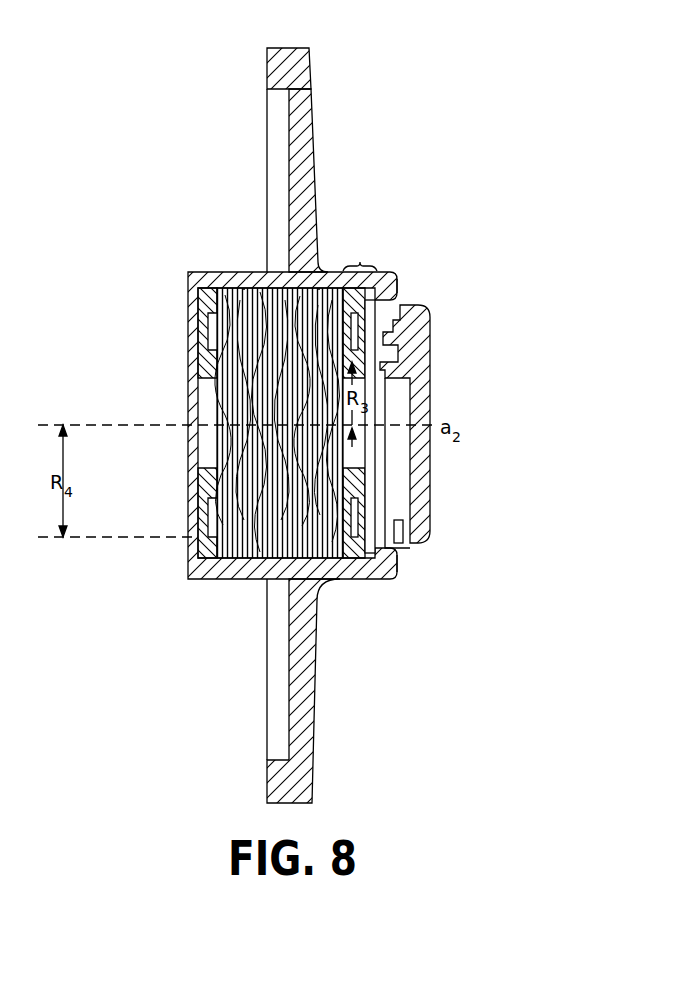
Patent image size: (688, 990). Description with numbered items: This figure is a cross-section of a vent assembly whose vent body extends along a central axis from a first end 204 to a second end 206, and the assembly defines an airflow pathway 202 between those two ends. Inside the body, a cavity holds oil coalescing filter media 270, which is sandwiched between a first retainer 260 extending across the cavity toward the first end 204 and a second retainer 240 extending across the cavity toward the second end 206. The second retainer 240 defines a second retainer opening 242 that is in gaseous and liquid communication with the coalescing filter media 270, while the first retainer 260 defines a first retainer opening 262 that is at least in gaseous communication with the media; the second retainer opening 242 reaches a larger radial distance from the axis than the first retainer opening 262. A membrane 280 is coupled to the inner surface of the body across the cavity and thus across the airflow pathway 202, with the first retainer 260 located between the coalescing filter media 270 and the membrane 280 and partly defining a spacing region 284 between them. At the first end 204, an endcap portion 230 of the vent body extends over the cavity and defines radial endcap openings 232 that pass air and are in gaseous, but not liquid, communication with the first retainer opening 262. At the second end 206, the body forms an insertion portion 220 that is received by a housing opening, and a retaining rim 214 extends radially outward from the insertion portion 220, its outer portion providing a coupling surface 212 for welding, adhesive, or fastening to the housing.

The airflow pathway 202 is at (400, 295).
The first end 204 is at (446, 391).
The second end 206 is at (190, 413).
The coupling surface 212 is at (302, 78).
The retaining rim 214 is at (312, 185).
The insertion portion 220 is at (230, 573).
The endcap portion 230 is at (444, 398).
The radial endcap openings 232 is at (400, 535).
The second retainer 240 is at (200, 323).
The second retainer opening 242 is at (205, 518).
The first retainer 260 is at (350, 570).
The first retainer opening 262 is at (358, 447).
The oil coalescing filter media 270 is at (243, 290).
The membrane 280 is at (380, 412).
The spacing region 284 is at (361, 255).